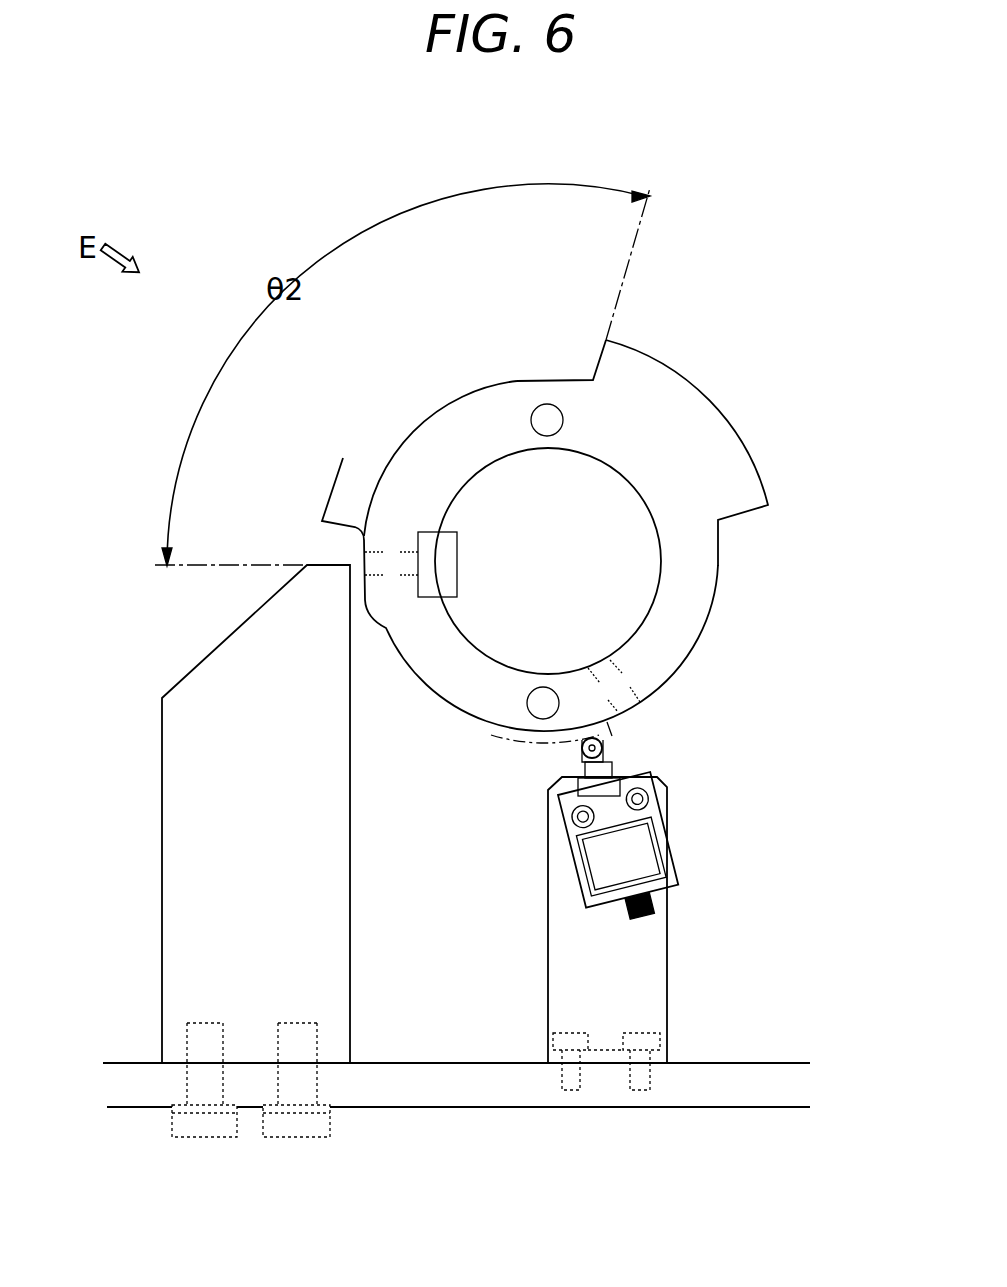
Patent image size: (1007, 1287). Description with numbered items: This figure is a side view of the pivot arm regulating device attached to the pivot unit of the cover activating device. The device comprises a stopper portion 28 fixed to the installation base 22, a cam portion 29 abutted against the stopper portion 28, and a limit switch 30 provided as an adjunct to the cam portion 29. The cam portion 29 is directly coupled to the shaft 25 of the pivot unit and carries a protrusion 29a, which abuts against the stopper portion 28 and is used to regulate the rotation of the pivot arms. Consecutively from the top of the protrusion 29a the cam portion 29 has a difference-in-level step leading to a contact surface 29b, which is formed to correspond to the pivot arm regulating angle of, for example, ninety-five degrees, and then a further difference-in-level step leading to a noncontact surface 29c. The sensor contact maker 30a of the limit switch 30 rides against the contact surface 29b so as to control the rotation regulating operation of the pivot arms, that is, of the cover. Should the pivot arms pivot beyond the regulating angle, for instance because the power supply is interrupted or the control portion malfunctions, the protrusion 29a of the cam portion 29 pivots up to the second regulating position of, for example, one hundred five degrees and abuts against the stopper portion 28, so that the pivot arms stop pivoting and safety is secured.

The installation base 22 is at (453, 1063).
The shaft 25 is at (642, 578).
The stopper portion 28 is at (175, 723).
The cam portion 29 is at (695, 378).
The protrusion 29a is at (733, 445).
The contact surface 29b is at (517, 380).
The noncontact surface 29c is at (435, 697).
The limit switch 30 is at (663, 838).
The sensor contact maker 30a is at (607, 745).